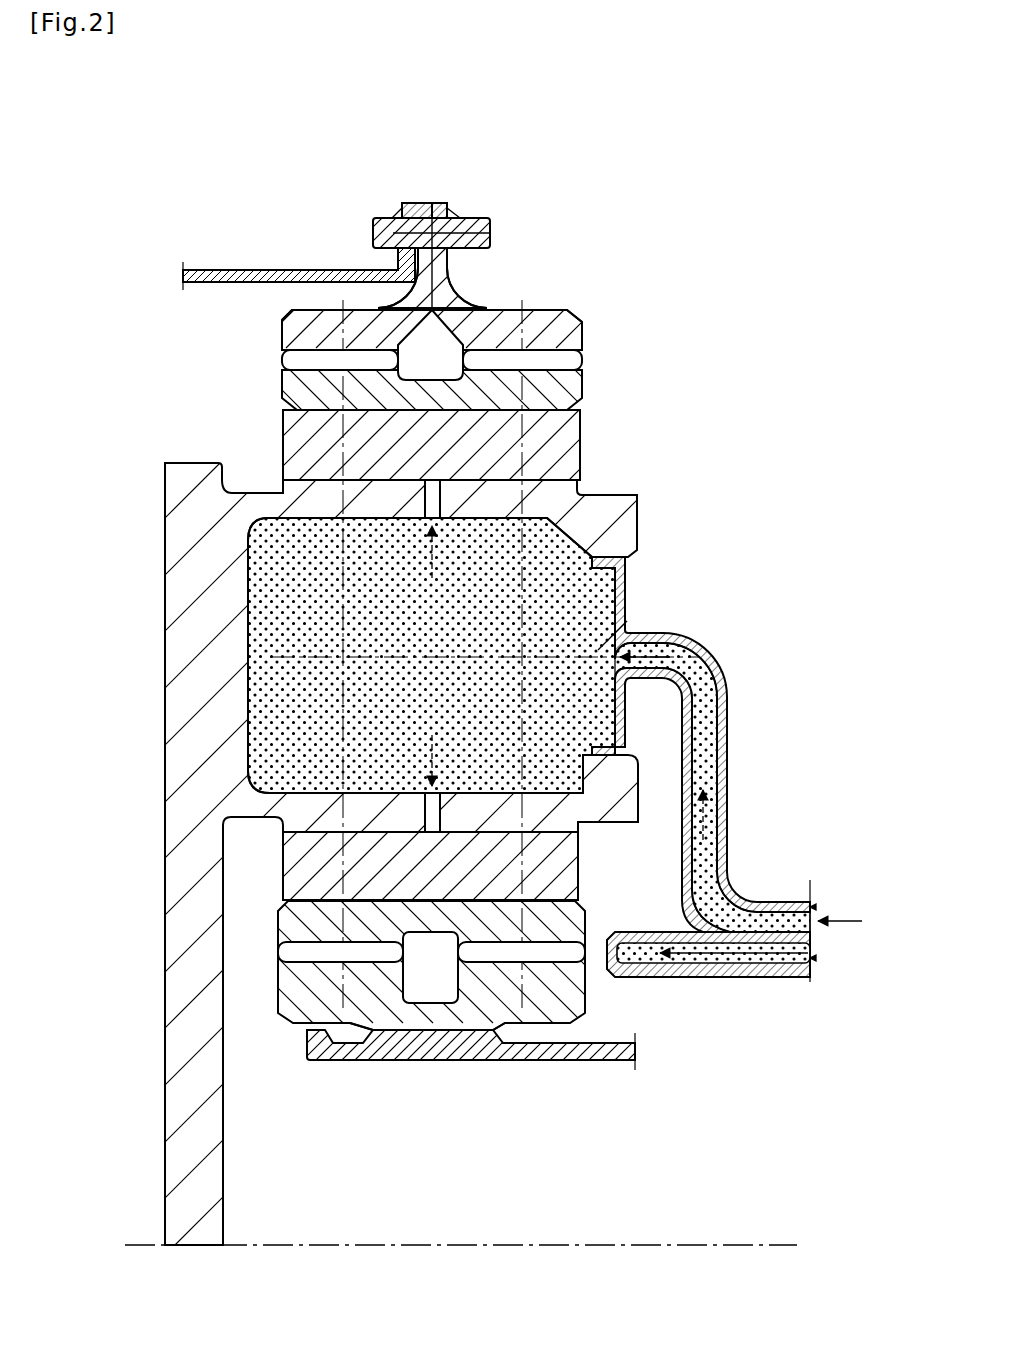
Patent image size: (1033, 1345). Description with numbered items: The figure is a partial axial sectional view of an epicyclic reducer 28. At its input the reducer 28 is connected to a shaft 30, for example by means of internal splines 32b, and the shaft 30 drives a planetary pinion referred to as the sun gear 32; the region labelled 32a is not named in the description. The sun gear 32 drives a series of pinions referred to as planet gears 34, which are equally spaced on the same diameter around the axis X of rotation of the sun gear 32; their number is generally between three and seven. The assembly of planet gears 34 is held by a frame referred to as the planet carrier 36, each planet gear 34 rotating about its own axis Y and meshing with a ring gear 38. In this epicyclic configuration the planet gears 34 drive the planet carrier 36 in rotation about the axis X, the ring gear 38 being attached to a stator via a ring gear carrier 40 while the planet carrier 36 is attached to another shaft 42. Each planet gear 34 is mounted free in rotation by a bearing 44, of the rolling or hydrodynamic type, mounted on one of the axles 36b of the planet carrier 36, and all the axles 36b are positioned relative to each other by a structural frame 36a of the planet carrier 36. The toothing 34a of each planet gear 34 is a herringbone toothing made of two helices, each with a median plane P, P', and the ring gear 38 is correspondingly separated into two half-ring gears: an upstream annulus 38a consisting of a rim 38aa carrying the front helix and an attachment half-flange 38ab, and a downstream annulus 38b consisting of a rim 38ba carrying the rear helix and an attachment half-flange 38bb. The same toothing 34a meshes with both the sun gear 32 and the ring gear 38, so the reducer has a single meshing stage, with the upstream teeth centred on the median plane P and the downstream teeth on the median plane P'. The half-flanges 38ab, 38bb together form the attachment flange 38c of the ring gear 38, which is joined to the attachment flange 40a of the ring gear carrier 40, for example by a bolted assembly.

The epicyclic reducer 28 is at (757, 421).
The shaft 30 is at (589, 1060).
The sun gear 32 is at (344, 1060).
The slot 32a is at (292, 948).
The internal splines 32b is at (398, 1037).
The planet gears 34 is at (555, 393).
The toothing 34a is at (285, 362).
The planet carrier 36 is at (516, 854).
The structural frame 36a is at (165, 613).
The axles 36b is at (622, 798).
The ring gear 38 is at (403, 534).
The upstream annulus 38a is at (298, 329).
The downstream annulus 38b is at (562, 337).
The rim 38aa is at (313, 323).
The rim 38ba is at (507, 323).
The attachment half-flange 38ab is at (423, 203).
The attachment half-flange 38bb is at (440, 203).
The attachment flange 38c is at (535, 77).
The ring gear carrier 40 is at (299, 222).
The shaft 42 is at (232, 270).
The attachment flange 40a is at (403, 207).
The bearing 44 is at (570, 447).
The median plane P is at (231, 1064).
The median plane P' is at (511, 1067).
The axis of rotation X is at (738, 1245).
The axis Y is at (625, 647).